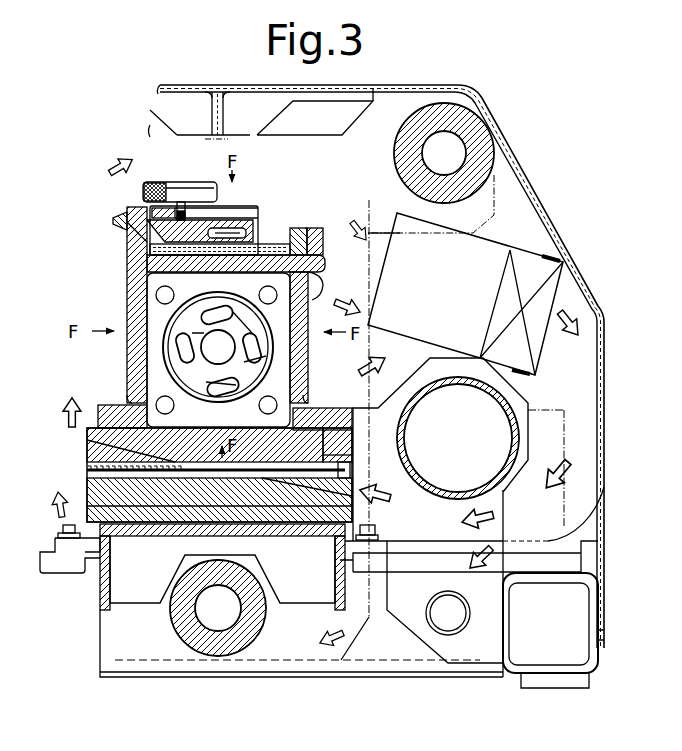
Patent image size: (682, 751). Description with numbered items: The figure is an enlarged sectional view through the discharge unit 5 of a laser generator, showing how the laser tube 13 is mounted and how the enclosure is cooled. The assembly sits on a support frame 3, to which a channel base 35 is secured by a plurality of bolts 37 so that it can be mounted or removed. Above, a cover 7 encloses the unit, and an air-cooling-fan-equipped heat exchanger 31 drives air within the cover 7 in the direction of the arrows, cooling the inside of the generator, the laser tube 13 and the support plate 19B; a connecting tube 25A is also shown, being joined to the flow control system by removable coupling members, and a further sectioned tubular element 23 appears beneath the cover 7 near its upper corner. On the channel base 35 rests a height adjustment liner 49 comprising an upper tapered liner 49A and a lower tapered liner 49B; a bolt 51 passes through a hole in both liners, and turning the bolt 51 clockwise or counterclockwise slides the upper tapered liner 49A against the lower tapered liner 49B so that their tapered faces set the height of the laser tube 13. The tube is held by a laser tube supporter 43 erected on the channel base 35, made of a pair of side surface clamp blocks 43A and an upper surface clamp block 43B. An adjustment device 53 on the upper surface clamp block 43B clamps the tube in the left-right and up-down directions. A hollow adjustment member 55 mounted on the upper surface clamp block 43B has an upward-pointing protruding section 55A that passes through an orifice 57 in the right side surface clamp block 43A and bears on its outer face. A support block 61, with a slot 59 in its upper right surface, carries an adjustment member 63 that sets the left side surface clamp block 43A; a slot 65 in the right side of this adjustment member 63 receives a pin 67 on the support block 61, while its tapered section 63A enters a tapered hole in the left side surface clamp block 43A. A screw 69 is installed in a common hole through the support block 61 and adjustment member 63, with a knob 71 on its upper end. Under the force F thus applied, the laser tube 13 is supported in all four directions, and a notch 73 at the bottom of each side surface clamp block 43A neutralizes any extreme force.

The support frame 3 is at (417, 566).
The discharge unit 5 is at (60, 193).
The cover 7 is at (432, 89).
The laser tube 13 is at (152, 312).
The support plate 19B is at (268, 127).
The roller 23 is at (476, 131).
The connecting tube 25A is at (506, 398).
The air-cooling-fan-equipped heat exchanger 31 is at (578, 290).
The channel base 35 is at (163, 537).
The bolt 37 is at (62, 527).
The laser tube supporter 43 is at (70, 244).
The side surface clamp block 43A is at (147, 290).
The upper surface clamp block 43B is at (150, 258).
The height adjustment liner 49 is at (189, 447).
The upper tapered liner 49A is at (88, 441).
The lower tapered liner 49B is at (88, 480).
The bolt 51 is at (322, 409).
The adjustment device 53 is at (302, 198).
The adjustment member 55 is at (272, 257).
The protruding section 55A is at (369, 219).
The orifice 57 is at (321, 270).
The slot 59 is at (262, 213).
The support block 61 is at (193, 192).
The adjustment member 63 is at (150, 212).
The tapered section 63A is at (120, 221).
The slot 65 is at (240, 231).
The pin 67 is at (282, 226).
The screw 69 is at (163, 183).
The knob 71 is at (181, 209).
The notch 73 is at (128, 404).